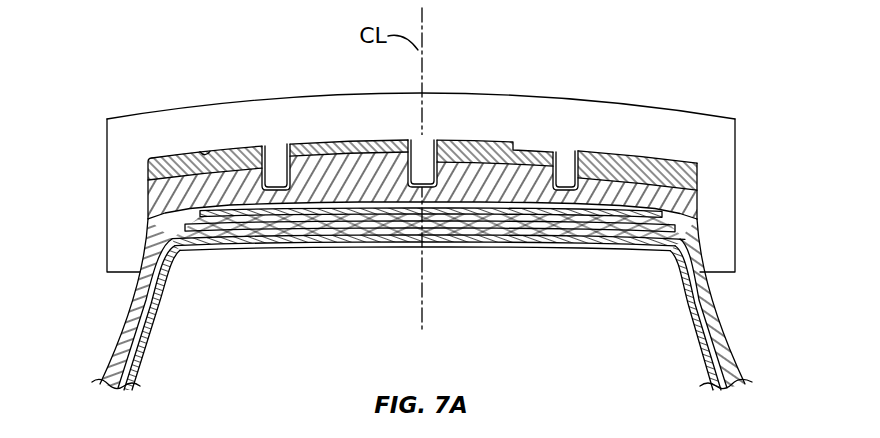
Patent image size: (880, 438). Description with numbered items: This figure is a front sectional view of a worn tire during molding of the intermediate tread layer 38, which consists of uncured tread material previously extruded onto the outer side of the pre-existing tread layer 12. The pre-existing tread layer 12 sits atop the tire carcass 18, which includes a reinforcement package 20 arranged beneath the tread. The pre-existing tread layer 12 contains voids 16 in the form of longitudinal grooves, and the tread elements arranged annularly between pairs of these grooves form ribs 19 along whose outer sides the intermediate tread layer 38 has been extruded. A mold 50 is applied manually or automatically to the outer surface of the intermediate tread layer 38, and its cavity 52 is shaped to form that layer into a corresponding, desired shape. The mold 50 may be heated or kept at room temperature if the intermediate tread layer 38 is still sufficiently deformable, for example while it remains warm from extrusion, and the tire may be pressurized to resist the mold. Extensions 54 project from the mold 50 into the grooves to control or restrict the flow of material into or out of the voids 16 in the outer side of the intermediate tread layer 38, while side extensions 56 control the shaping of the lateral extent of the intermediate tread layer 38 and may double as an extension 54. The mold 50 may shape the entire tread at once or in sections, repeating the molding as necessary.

The mold 50 is at (150, 123).
The cavity 52 is at (205, 154).
The extension 54 is at (273, 158).
The intermediate tread layer 38 is at (158, 172).
The pre-existing tread layer 12 is at (151, 200).
The side extension 56 is at (115, 245).
The void 16 is at (272, 205).
The rib 19 is at (182, 193).
The reinforcement package 20 is at (680, 242).
The tire carcass 18 is at (730, 347).